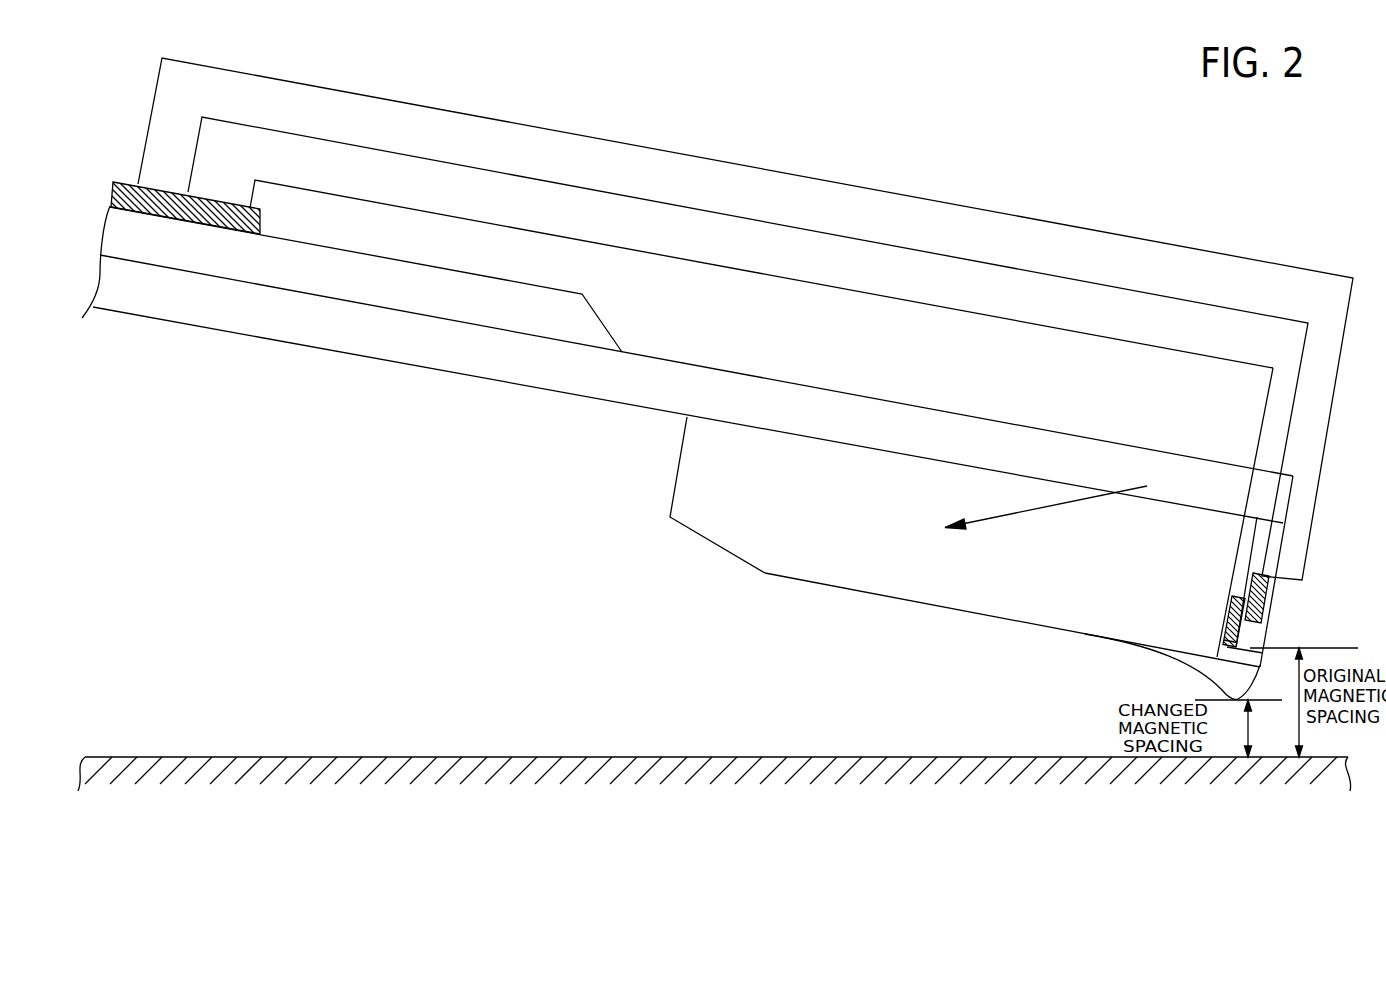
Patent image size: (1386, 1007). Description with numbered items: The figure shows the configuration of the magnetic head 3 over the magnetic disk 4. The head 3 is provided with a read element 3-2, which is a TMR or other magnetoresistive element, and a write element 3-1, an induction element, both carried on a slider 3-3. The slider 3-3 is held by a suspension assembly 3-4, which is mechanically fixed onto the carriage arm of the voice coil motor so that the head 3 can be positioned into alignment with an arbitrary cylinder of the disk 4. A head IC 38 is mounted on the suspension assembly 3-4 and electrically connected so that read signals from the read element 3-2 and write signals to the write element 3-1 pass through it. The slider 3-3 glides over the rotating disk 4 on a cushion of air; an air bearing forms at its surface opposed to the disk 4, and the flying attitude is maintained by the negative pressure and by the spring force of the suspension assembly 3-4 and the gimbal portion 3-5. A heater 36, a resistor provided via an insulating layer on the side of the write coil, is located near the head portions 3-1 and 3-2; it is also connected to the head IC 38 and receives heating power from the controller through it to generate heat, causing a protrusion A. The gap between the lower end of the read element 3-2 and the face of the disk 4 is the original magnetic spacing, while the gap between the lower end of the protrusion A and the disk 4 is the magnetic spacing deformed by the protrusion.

The magnetic head 3 is at (693, 498).
The write element 3-1 is at (1250, 640).
The read element 3-2 is at (1223, 630).
The slider 3-3 is at (895, 563).
The suspension assembly 3-4 is at (363, 333).
The gimbal portion 3-5 is at (667, 385).
The heater 36 is at (1263, 598).
The head IC 38 is at (118, 182).
The magnetic disk 4 is at (203, 757).
The protrusion A is at (1237, 679).